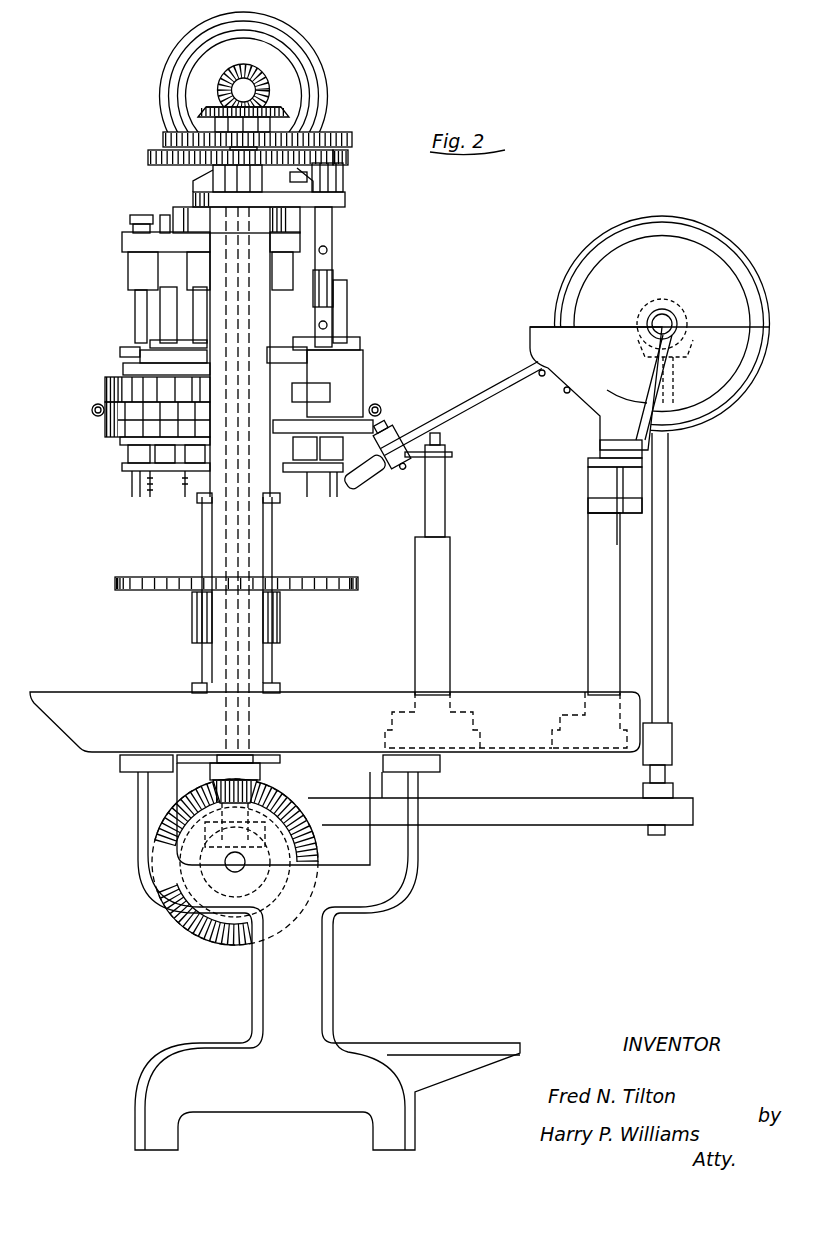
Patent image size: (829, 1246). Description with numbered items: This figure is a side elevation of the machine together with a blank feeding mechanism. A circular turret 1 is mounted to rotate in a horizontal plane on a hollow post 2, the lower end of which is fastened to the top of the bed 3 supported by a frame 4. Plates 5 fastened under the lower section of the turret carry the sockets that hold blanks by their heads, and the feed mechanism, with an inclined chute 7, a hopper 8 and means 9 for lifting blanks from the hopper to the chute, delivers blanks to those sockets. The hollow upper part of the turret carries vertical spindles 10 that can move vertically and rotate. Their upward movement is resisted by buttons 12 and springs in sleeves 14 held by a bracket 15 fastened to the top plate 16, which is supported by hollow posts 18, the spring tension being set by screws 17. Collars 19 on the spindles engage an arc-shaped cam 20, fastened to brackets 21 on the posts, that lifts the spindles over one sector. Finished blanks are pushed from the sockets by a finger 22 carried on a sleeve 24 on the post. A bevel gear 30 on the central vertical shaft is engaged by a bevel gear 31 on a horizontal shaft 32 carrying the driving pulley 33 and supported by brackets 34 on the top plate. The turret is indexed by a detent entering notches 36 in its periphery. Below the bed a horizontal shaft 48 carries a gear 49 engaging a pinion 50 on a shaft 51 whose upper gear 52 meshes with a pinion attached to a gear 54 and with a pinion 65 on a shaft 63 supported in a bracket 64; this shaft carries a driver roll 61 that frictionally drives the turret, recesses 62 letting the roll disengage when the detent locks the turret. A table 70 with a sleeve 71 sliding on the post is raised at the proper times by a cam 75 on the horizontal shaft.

The circular turret 1 is at (110, 425).
The hollow post 2 is at (200, 667).
The bed 3 is at (335, 722).
The frame 4 is at (252, 991).
The plates 5 is at (145, 497).
The inclined chute 7 is at (457, 418).
The hopper 8 is at (650, 548).
The means for lifting the blanks 9 is at (662, 323).
The vertical spindles 10 is at (165, 320).
The buttons 12 is at (140, 297).
The sleeves 14 is at (135, 268).
The bracket 15 is at (122, 241).
The top plate 16 is at (345, 199).
The screws 17 is at (135, 215).
The hollow posts 18 is at (206, 536).
The collars 19 is at (155, 343).
The arc-shaped cam 20 is at (122, 352).
The brackets 21 is at (208, 372).
The finger 22 is at (300, 478).
The sleeve 24 is at (280, 502).
The bevel gear 30 is at (274, 96).
The bevel gear 31 is at (268, 80).
The horizontal shaft 32 is at (251, 85).
The driving pulley 33 is at (288, 40).
The brackets 34 is at (282, 122).
The notches 36 is at (125, 440).
The horizontal shaft 48 is at (228, 872).
The gear 49 is at (163, 923).
The pinion 50 is at (260, 780).
The shaft 51 is at (262, 800).
The gear 52 is at (148, 158).
The gear 54 is at (163, 138).
The driver roll 61 is at (335, 392).
The recesses 62 is at (110, 390).
The shaft 63 is at (333, 265).
The bracket 64 is at (355, 360).
The pinion 65 is at (348, 158).
The table 70 is at (350, 578).
The sleeve 71 is at (282, 620).
The cam 75 is at (293, 873).